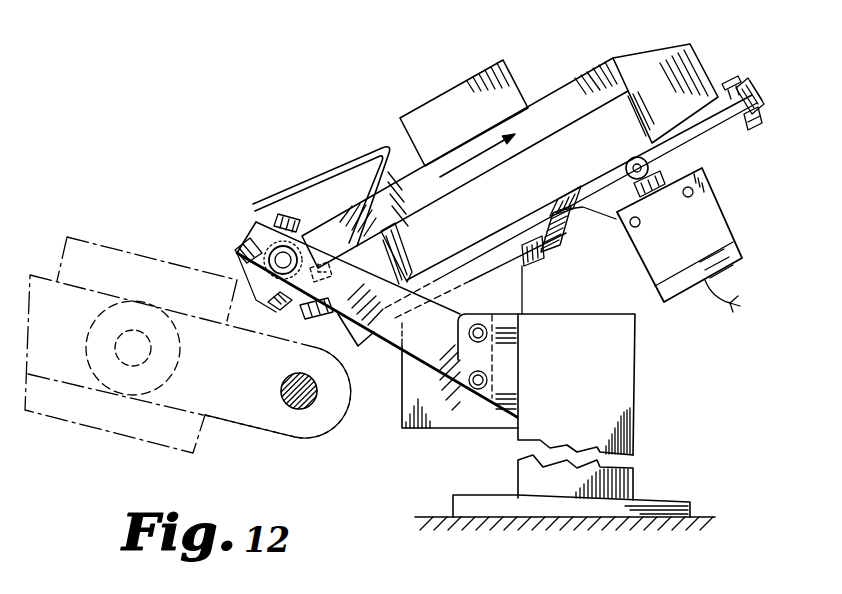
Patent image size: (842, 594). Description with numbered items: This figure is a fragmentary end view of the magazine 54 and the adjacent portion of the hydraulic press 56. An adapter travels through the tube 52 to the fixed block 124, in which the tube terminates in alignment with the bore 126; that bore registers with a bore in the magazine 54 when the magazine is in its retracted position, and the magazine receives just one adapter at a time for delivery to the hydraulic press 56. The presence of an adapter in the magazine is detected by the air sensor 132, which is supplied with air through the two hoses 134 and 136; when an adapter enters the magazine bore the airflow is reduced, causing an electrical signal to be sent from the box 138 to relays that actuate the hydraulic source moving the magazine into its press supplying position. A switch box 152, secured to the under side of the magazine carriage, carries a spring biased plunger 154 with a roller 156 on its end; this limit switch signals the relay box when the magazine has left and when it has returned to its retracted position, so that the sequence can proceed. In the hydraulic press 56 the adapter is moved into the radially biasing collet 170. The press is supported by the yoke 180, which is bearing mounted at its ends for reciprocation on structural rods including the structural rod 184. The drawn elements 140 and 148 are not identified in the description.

The tube 52 is at (264, 258).
The magazine 54 is at (336, 132).
The hydraulic press 56 is at (93, 438).
The fixed block 124 is at (255, 224).
The bore 126 is at (292, 318).
The air sensor 132 is at (290, 203).
The hose 134 is at (362, 166).
The hose 136 is at (394, 222).
The box 138 is at (440, 98).
The end block 140 is at (652, 75).
The rail 148 is at (578, 214).
The switch box 152 is at (703, 221).
The spring biased plunger 154 is at (690, 161).
The roller 156 is at (626, 167).
The radially biasing collet 170 is at (151, 349).
The yoke 180 is at (243, 432).
The structural rod 184 is at (302, 408).